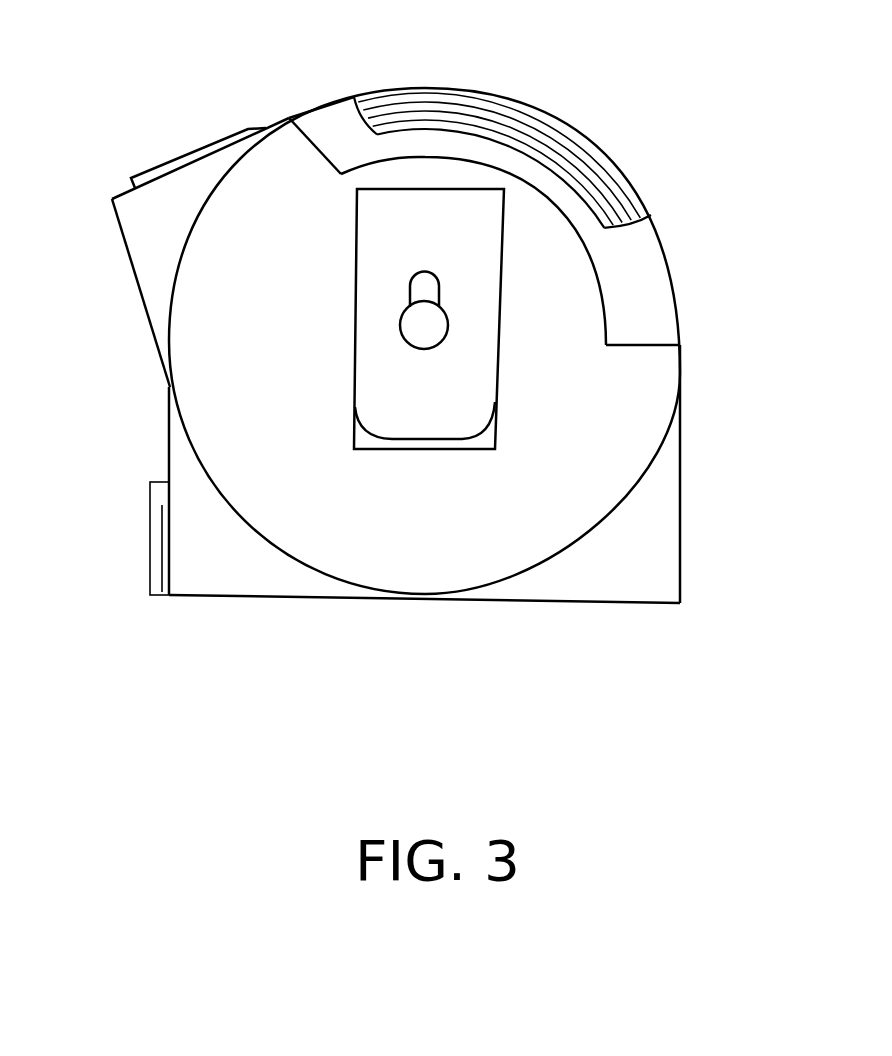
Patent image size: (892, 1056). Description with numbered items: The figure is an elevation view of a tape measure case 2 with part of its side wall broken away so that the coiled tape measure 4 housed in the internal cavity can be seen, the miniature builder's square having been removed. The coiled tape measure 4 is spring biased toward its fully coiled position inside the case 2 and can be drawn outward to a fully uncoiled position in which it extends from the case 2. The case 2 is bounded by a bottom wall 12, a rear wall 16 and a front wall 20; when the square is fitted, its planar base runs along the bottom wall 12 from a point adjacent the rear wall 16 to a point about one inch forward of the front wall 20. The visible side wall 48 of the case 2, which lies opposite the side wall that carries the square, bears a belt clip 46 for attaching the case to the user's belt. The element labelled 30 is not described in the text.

The tape measure case 2 is at (600, 568).
The coiled tape measure 4 is at (575, 158).
The bottom wall 12 is at (287, 593).
The rear wall 16 is at (678, 497).
The front wall 20 is at (165, 430).
The tape guide member 30 is at (325, 99).
The belt clip 46 is at (497, 387).
The side wall 48 is at (417, 555).